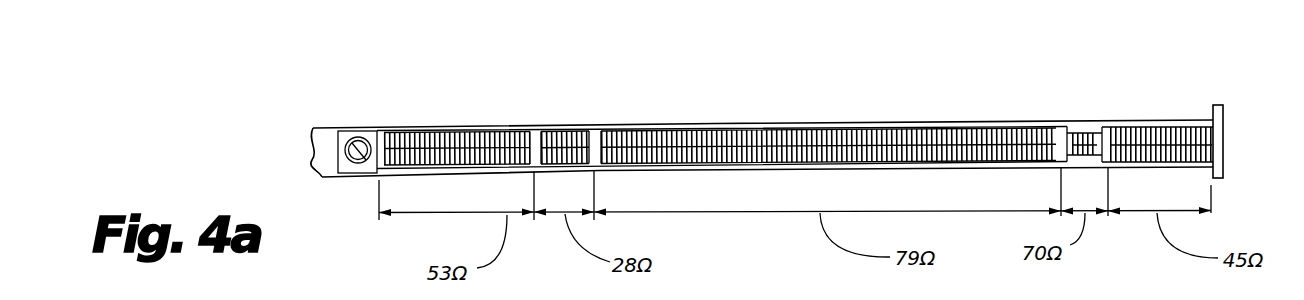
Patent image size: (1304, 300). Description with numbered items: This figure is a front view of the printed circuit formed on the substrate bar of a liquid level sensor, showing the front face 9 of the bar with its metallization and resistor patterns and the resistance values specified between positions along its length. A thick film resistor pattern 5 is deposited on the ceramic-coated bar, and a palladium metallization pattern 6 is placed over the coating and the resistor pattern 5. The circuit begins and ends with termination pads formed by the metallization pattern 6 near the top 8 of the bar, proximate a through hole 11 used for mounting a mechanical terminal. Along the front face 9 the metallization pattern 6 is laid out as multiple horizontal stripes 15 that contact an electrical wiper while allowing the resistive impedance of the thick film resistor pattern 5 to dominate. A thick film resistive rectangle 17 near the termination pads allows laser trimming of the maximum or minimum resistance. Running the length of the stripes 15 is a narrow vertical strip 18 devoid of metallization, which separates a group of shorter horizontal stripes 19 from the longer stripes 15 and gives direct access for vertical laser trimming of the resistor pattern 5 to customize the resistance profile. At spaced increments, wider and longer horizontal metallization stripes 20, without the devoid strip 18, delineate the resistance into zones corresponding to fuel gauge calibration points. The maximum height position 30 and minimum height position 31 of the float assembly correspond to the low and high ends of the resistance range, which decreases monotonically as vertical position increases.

The thick film resistor pattern 5 is at (815, 136).
The palladium metallization pattern 6 is at (748, 138).
The top of the bar 8 is at (322, 181).
The front face 9 is at (900, 137).
The through hole 11 is at (353, 142).
The horizontal stripes 15 is at (718, 138).
The thick film resistive rectangle 17 is at (1155, 133).
The narrow vertical strip 18 is at (536, 134).
The horizontal stripes 19 is at (984, 131).
The horizontal metallization stripes 20 is at (598, 138).
The maximum height position 30 is at (372, 160).
The minimum height position 31 is at (1210, 147).